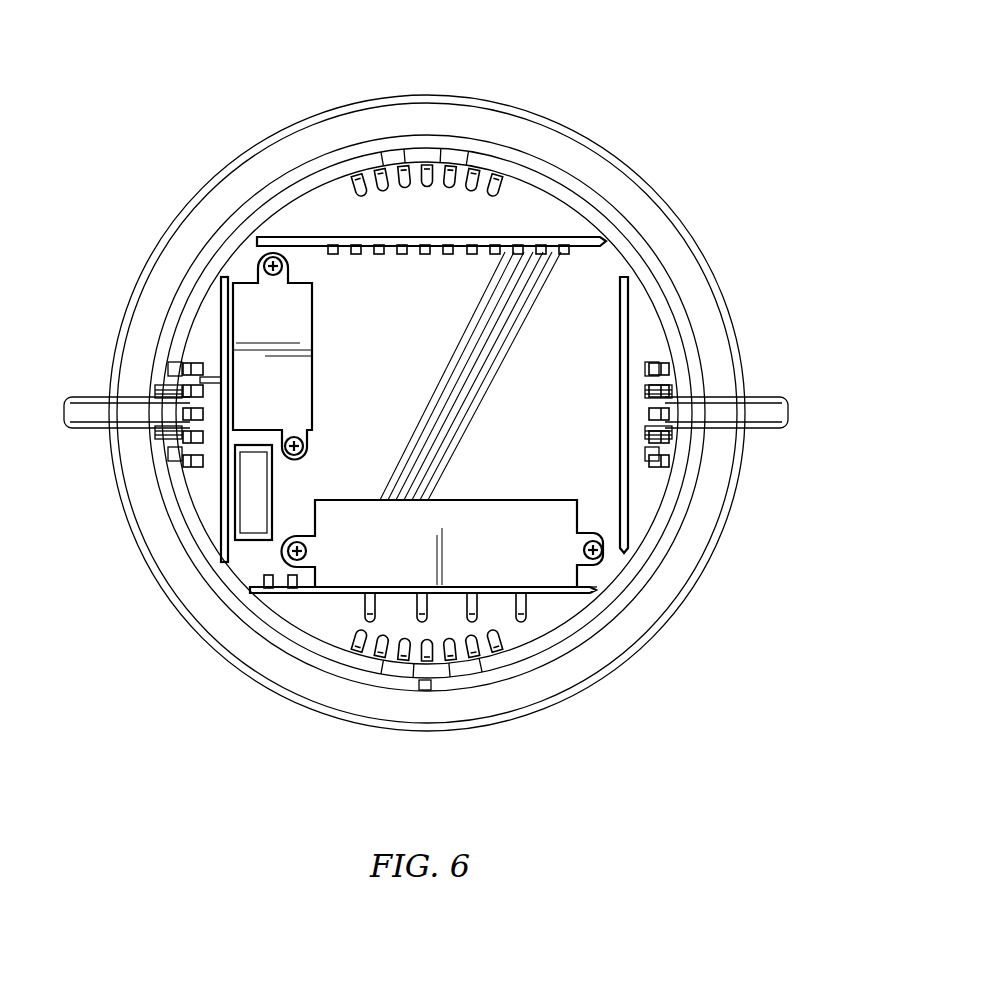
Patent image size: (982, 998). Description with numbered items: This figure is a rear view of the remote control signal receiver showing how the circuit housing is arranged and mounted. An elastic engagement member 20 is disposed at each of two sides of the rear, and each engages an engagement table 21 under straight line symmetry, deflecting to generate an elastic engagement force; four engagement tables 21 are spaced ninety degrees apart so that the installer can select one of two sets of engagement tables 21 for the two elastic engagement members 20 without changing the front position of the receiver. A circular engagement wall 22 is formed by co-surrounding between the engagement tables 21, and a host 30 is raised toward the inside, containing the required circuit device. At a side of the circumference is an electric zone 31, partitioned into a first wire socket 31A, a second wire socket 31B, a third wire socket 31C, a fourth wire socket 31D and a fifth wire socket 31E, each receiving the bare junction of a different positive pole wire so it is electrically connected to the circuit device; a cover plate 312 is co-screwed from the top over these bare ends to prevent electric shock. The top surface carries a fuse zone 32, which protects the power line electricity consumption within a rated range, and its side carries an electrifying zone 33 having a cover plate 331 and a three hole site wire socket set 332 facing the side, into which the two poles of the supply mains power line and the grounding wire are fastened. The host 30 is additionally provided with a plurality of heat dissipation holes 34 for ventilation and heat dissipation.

The elastic engagement member 20 is at (82, 395).
The engagement table 21 is at (458, 153).
The circular engagement wall 22 is at (588, 213).
The host 30 is at (588, 278).
The electric zone 31 is at (493, 593).
The first wire socket 31A is at (533, 595).
The second wire socket 31B is at (520, 593).
The third wire socket 31C is at (447, 597).
The fourth wire socket 31D is at (397, 597).
The fifth wire socket 31E is at (322, 593).
The cover plate 312 is at (350, 573).
The fuse zone 32 is at (232, 532).
The electrifying zone 33 is at (215, 332).
The cover plate 331 is at (270, 298).
The wire socket set 332 is at (197, 247).
The heat dissipation hole 34 is at (380, 176).